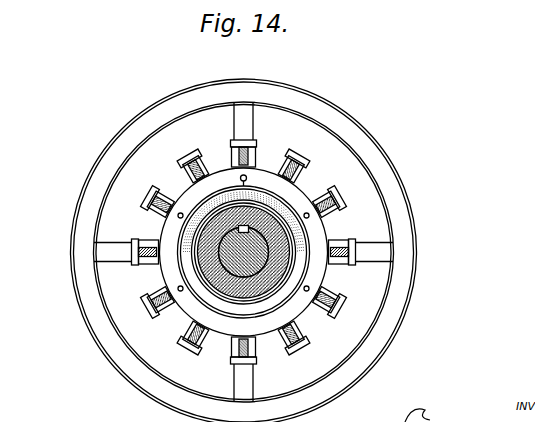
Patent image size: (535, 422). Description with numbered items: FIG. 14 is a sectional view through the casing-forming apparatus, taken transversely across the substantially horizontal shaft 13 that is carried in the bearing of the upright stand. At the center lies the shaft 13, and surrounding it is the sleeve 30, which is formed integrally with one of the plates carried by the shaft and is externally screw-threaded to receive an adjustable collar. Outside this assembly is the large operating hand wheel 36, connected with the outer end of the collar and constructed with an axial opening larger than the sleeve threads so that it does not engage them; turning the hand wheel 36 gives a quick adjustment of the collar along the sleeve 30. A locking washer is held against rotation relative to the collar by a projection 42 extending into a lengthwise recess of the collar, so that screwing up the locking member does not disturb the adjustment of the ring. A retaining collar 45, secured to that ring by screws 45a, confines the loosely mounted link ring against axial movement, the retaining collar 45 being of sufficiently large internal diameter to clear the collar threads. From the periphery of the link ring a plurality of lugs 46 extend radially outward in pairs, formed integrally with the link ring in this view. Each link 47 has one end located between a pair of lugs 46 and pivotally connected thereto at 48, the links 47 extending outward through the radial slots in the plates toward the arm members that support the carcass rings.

The shaft 13 is at (248, 268).
The sleeve 30 is at (279, 272).
The hand wheel 36 is at (403, 252).
The projection 42 is at (244, 177).
The retaining collar 45 is at (298, 188).
The screw 45a is at (310, 216).
The lug 46 is at (298, 163).
The link 47 is at (338, 197).
The pivotal connection 48 is at (306, 168).